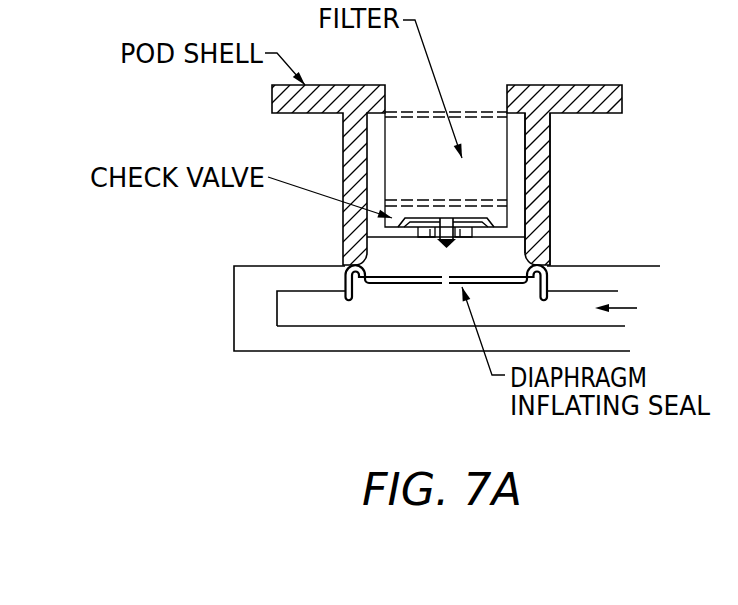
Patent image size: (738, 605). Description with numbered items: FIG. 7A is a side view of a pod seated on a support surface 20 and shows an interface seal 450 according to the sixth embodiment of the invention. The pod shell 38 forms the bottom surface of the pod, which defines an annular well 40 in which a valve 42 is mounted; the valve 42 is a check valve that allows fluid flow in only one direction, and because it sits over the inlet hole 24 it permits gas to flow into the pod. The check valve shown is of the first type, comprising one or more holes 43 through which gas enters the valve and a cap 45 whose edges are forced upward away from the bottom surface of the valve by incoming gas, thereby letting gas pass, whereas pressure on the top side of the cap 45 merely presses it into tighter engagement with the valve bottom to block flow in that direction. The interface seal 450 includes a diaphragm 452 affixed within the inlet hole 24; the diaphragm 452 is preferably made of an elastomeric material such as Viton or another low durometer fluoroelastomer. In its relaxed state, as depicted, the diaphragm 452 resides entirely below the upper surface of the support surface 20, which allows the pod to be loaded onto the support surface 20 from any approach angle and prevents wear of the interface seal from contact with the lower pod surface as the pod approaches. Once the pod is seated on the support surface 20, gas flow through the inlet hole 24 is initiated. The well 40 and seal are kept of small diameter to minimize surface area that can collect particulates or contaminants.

The support surface 20 is at (252, 310).
The inlet hole 24 is at (452, 316).
The pod shell 38 is at (594, 85).
The annular well 40 is at (523, 180).
The valve 42 is at (523, 143).
The holes 43 is at (428, 238).
The cap 45 is at (403, 226).
The interface seal 450 is at (375, 297).
The diaphragm 452 is at (511, 283).